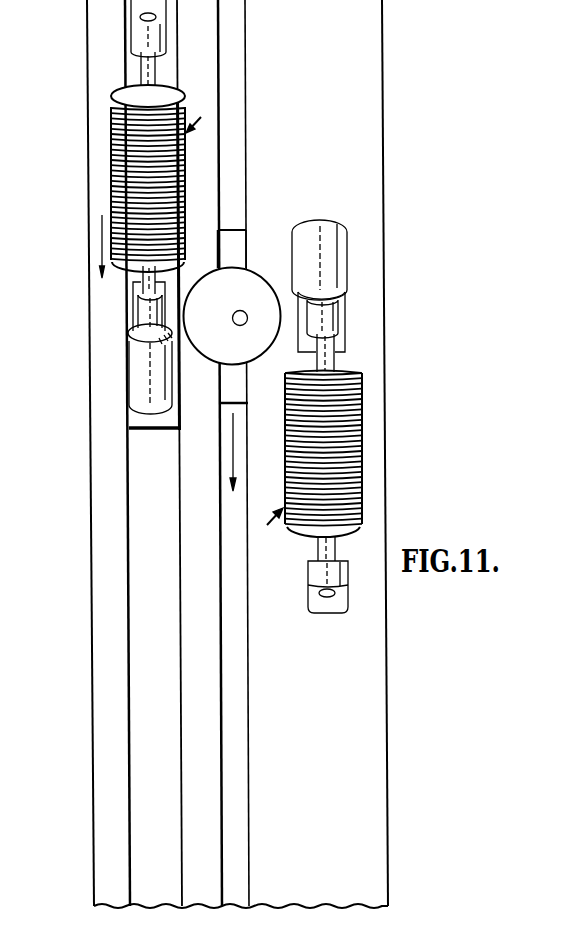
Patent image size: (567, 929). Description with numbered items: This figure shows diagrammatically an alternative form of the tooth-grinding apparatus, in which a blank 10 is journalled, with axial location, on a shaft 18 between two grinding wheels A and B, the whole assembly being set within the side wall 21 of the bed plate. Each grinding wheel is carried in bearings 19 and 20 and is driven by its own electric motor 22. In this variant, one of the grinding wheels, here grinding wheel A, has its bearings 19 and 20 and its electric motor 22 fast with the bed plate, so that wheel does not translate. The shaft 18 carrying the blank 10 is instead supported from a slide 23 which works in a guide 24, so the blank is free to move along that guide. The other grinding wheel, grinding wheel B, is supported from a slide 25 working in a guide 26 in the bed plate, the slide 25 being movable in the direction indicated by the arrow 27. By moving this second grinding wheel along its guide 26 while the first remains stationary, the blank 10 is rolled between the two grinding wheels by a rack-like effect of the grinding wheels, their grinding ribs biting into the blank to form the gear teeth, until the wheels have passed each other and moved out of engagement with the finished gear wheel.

The blank 10 is at (236, 301).
The shaft 18 is at (244, 324).
The bearing 19 is at (137, 33).
The bearing 20 is at (145, 310).
The housing side wall 21 is at (360, 137).
The electric motor 22 is at (140, 378).
The slide 23 is at (233, 242).
The guide 24 is at (237, 734).
The slide 25 is at (151, 421).
The guide 26 is at (145, 575).
The arrow 27 is at (100, 241).
The grinding wheel A is at (110, 168).
The grinding wheel B is at (357, 420).